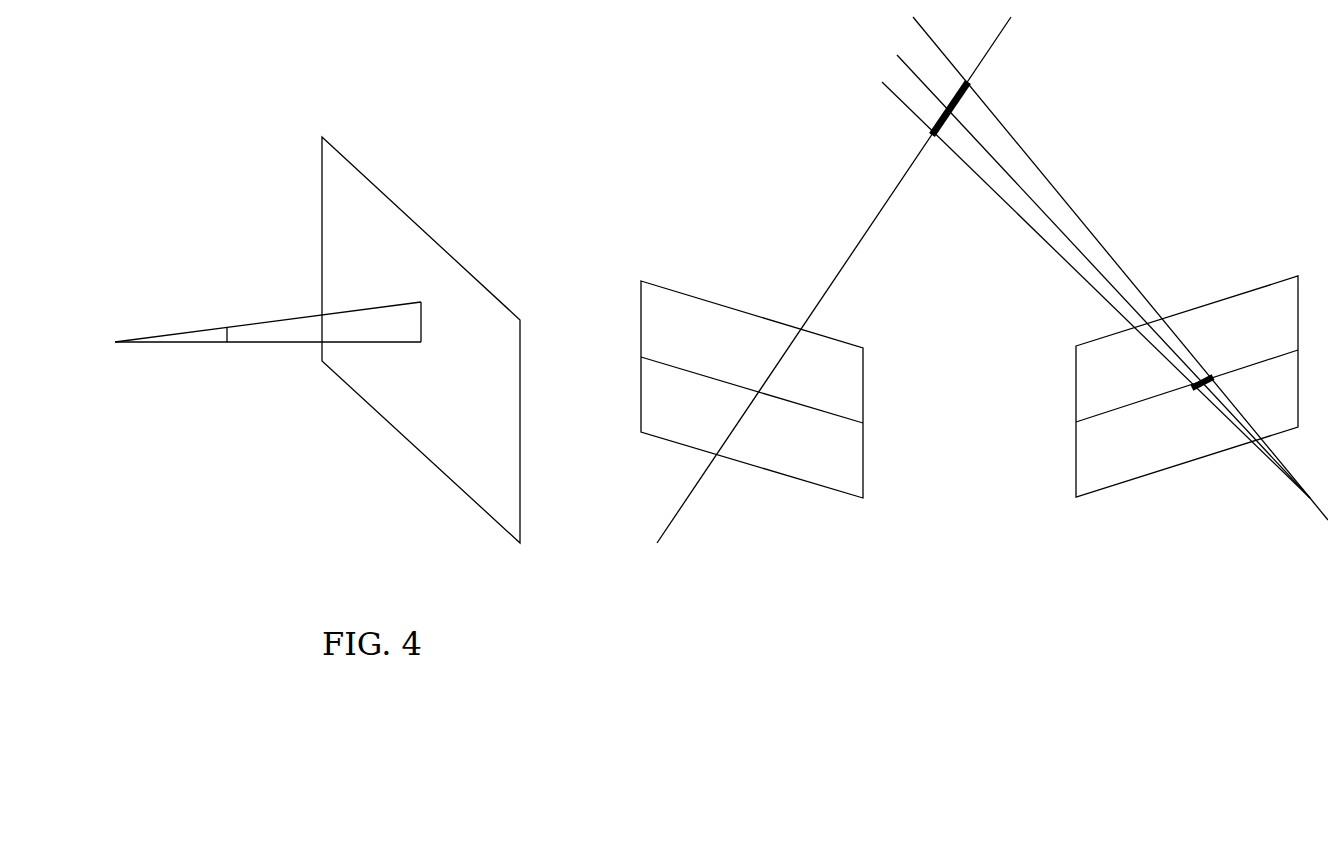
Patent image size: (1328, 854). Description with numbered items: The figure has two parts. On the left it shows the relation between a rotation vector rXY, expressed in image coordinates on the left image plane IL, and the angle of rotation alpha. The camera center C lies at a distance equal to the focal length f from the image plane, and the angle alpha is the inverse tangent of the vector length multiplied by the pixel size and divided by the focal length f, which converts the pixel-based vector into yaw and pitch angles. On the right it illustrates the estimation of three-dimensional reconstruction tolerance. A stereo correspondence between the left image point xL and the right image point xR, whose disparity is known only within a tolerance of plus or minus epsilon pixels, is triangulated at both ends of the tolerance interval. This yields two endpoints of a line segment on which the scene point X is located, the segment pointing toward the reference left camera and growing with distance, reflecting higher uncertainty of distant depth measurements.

The camera center C is at (83, 343).
The focal length f is at (268, 369).
The angle of rotation alpha is at (227, 316).
The rotation vector in image coordinates rXY is at (302, 326).
The left image plane IL is at (421, 340).
The left image point of stereo correspondence xL is at (826, 280).
The right image point of stereo correspondence with disparity tolerance xR is at (1187, 403).
The 3D scene point X is at (1096, 268).